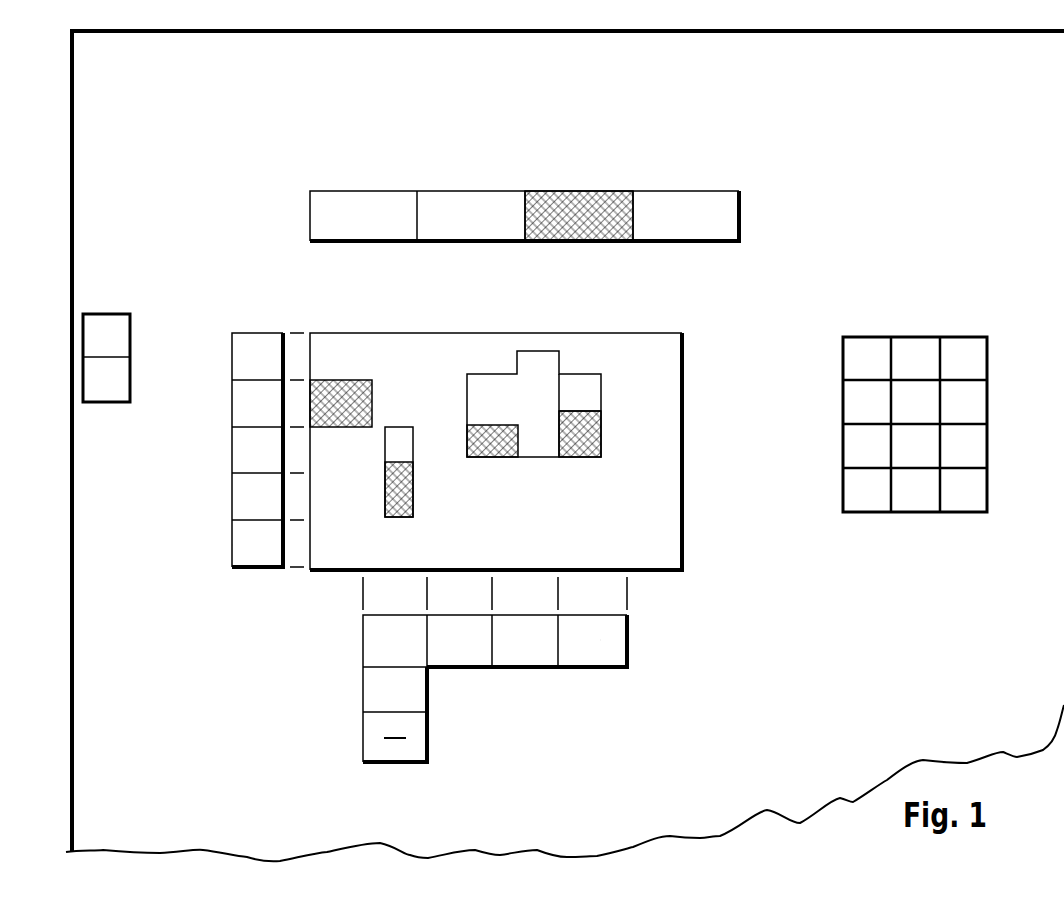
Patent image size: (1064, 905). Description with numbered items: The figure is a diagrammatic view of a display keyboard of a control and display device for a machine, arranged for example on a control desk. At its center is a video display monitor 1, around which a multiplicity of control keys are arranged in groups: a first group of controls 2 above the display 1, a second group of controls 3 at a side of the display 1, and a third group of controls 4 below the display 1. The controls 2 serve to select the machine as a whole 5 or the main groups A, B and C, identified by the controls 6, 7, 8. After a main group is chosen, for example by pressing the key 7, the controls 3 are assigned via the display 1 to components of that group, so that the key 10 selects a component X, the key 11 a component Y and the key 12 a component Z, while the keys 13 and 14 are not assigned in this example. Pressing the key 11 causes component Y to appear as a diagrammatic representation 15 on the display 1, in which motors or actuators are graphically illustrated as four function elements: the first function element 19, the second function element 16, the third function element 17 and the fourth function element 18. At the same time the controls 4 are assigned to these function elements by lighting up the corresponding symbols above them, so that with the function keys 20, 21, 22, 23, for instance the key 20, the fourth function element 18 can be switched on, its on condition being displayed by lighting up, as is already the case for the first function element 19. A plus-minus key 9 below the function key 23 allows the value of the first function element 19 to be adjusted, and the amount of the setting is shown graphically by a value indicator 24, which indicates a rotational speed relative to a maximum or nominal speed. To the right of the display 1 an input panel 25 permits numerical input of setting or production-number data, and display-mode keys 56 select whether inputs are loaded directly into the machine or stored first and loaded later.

The video display monitor 1 is at (645, 345).
The first group of controls 2 is at (558, 190).
The second group of controls 3 is at (222, 398).
The third group of controls 4 is at (505, 676).
The control for machine as a whole 5 is at (378, 201).
The control for main group A 6 is at (494, 202).
The control for main group B 7 is at (604, 197).
The control for main group C 8 is at (660, 201).
The plus-minus key 9 is at (342, 731).
The key 10 is at (240, 355).
The key 11 is at (240, 402).
The key 12 is at (240, 450).
The key 13 is at (240, 497).
The key 14 is at (240, 546).
The diagrammatic representation 15 is at (610, 397).
The function element II 16 is at (549, 356).
The function element III 17 is at (600, 386).
The function element IV 18 is at (598, 444).
The function element I 19 is at (503, 459).
The function key 20 is at (596, 650).
The function key 21 is at (529, 650).
The function key 22 is at (461, 650).
The function key 23 is at (378, 645).
The value indicator 24 is at (383, 483).
The input panel 25 is at (969, 321).
The display-mode keys 56 is at (108, 304).